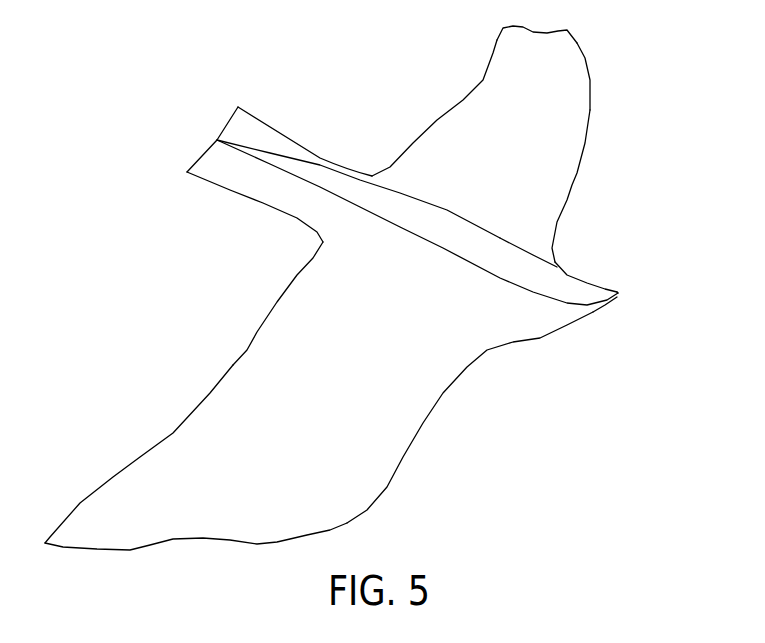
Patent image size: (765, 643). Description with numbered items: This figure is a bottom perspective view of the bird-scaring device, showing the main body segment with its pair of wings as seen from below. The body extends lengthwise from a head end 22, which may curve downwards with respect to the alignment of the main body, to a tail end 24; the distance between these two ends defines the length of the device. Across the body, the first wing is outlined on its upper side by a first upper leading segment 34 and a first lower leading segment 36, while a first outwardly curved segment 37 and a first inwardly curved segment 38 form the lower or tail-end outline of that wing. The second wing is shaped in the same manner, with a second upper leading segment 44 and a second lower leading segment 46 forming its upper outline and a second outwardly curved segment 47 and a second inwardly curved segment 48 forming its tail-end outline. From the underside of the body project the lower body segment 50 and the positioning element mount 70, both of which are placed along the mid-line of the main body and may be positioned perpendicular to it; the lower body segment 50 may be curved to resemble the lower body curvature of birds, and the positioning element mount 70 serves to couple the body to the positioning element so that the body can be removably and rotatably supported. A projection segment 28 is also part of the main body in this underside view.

The head end 22 is at (613, 296).
The tail end 24 is at (257, 174).
The projection segment 28 is at (417, 217).
The first upper leading segment 34 is at (590, 186).
The first lower leading segment 36 is at (608, 69).
The first outwardly curved segment 37 is at (434, 108).
The first inwardly curved segment 38 is at (515, 34).
The second upper leading segment 44 is at (470, 417).
The second lower leading segment 46 is at (214, 543).
The second outwardly curved segment 47 is at (267, 303).
The second inwardly curved segment 48 is at (139, 454).
The lower body segment 50 is at (358, 189).
The positioning element mount 70 is at (528, 228).